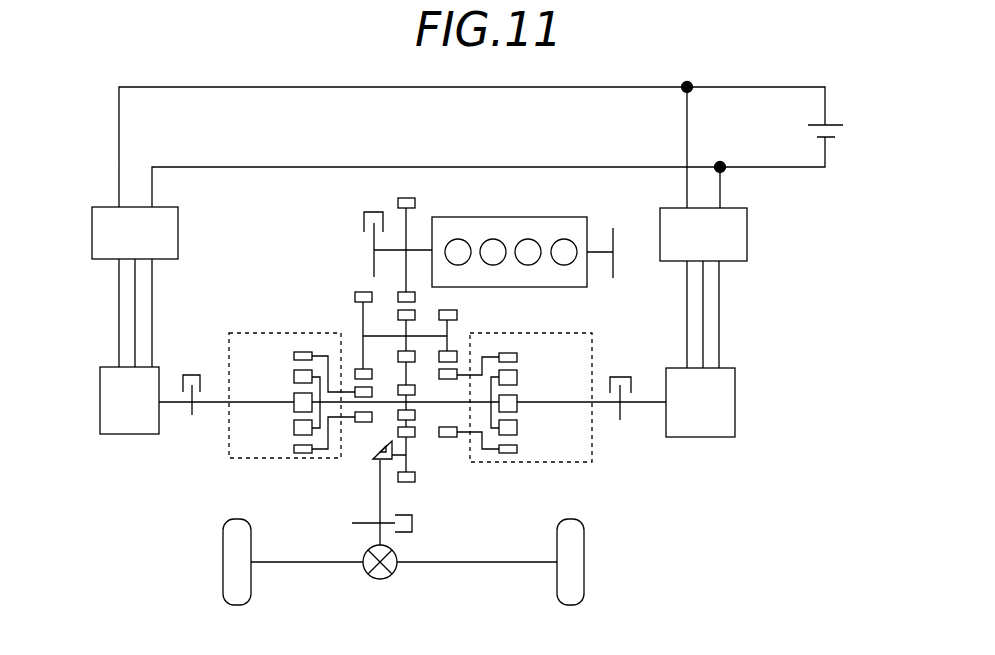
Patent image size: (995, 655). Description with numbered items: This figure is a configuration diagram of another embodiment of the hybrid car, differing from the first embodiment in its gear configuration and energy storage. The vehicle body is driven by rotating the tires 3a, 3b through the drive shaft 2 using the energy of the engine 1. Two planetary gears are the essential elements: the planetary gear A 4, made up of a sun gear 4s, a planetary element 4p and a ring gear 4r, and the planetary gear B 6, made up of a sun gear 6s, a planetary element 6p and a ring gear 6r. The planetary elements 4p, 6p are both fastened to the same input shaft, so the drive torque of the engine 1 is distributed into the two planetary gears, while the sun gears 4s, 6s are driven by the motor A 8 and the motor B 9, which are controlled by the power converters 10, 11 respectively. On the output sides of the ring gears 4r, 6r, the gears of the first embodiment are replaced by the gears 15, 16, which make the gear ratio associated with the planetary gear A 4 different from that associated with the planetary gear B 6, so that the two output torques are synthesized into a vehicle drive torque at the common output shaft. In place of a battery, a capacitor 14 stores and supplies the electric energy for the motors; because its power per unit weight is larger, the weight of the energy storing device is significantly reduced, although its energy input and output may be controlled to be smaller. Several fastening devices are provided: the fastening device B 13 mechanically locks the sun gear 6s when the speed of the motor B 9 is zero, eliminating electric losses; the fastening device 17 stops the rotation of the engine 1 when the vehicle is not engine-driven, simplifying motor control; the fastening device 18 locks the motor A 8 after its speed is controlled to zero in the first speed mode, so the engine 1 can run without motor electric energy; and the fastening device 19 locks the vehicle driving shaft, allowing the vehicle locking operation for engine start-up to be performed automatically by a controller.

The engine 1 is at (580, 217).
The drive shaft 2 is at (465, 562).
The tire 3a is at (251, 553).
The tire 3b is at (584, 549).
The planetary gear A 4 is at (526, 383).
The ring gear 4r is at (517, 357).
The sun gear 4s is at (517, 398).
The planetary element 4p is at (517, 432).
The planetary gear B 6 is at (292, 379).
The ring gear 6r is at (294, 356).
The sun gear 6s is at (294, 398).
The planetary element 6p is at (294, 430).
The motor A 8 is at (735, 368).
The motor B 9 is at (100, 383).
The power converter 10 is at (747, 236).
The power converter 11 is at (178, 230).
The fastening device B 13 is at (192, 375).
The capacitor 14 is at (835, 125).
The gear 15 is at (457, 316).
The gear 16 is at (355, 296).
The fastening device 17 is at (372, 212).
The fastening device 18 is at (620, 377).
The fastening device 19 is at (412, 523).